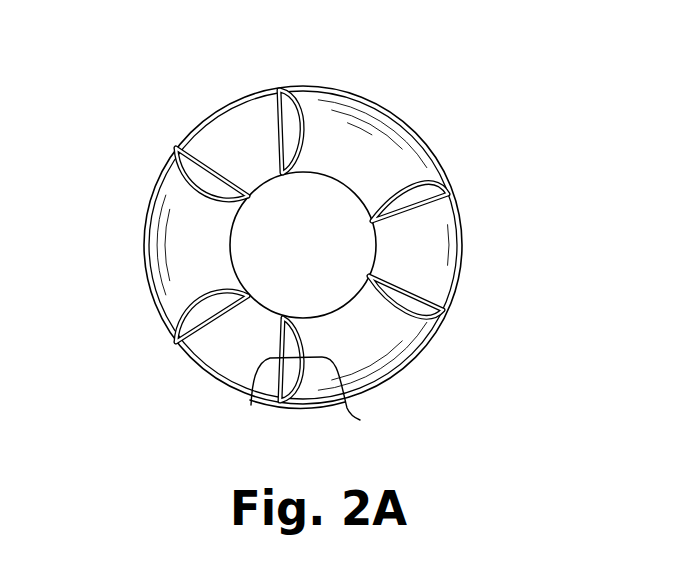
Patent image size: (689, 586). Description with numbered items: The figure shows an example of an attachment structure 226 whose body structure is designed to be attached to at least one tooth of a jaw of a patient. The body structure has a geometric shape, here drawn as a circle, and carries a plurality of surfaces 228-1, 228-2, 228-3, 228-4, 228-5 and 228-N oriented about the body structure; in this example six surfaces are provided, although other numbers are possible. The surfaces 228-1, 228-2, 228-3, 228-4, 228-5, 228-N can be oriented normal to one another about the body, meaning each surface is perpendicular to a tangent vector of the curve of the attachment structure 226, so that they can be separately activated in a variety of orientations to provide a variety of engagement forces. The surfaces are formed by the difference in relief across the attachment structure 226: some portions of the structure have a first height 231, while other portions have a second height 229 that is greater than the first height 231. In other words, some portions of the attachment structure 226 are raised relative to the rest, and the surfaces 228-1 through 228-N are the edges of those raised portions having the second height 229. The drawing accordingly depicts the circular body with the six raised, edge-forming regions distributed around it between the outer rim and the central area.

The attachment structure 226 is at (113, 47).
The surface 228-N is at (288, 94).
The surface 228-5 is at (192, 146).
The surface 228-4 is at (192, 347).
The surface 228-3 is at (262, 392).
The surface 228-1 is at (450, 202).
The surface 228-2 is at (450, 293).
The first height 231 is at (263, 394).
The second height 229 is at (324, 397).